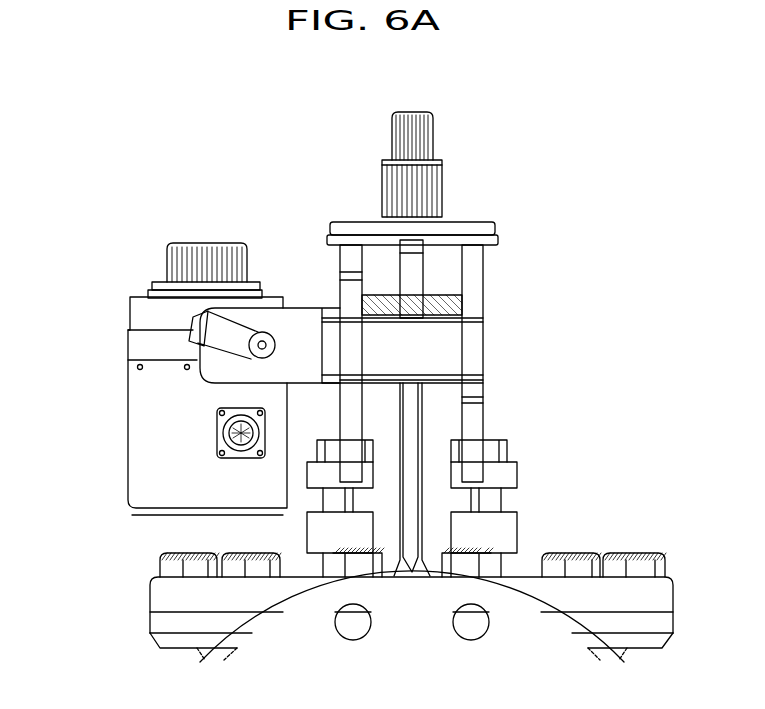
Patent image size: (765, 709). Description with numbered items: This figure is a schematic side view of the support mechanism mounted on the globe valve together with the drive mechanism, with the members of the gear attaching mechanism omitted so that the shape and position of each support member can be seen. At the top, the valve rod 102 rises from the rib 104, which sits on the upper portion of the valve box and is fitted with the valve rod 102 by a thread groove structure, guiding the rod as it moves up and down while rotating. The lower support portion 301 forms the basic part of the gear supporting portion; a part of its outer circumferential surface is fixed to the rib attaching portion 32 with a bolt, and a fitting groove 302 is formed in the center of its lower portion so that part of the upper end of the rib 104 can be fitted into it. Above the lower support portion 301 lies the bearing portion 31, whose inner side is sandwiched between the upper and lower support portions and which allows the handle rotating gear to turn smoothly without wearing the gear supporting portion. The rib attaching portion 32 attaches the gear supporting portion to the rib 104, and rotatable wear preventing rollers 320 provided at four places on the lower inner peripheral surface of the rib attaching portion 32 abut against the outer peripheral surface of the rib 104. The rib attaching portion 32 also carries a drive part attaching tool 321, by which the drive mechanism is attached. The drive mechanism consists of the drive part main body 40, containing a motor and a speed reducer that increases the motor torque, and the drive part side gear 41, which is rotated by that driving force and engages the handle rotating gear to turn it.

The drive part main body 40 is at (165, 412).
The drive part side gear 41 is at (217, 244).
The drive part attaching tool 321 is at (290, 327).
The valve rod 102 is at (432, 129).
The lower support portion 301 is at (378, 257).
The bearing portion 31 is at (470, 222).
The rib attaching portion 32 is at (473, 258).
The fitting groove 302 is at (426, 270).
The rib 104 is at (412, 413).
The wear preventing rollers 320 is at (455, 460).